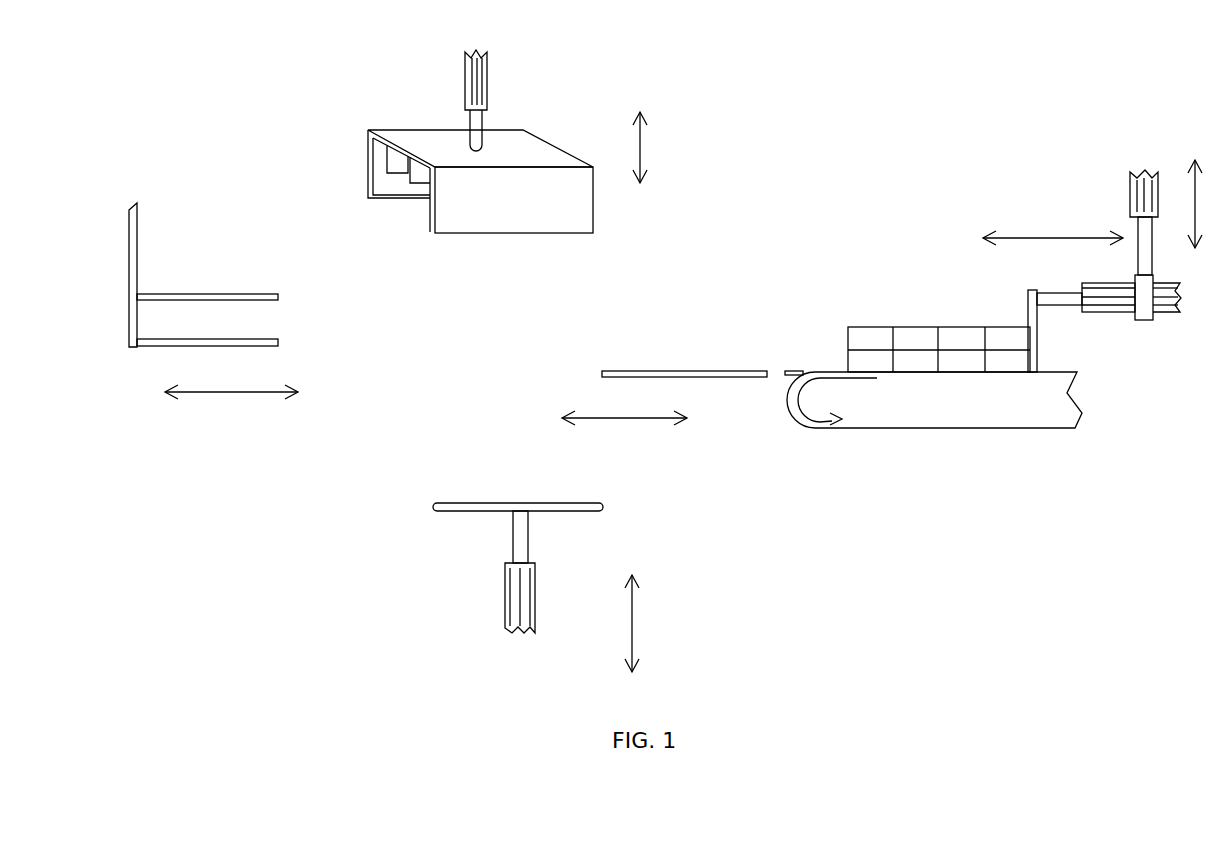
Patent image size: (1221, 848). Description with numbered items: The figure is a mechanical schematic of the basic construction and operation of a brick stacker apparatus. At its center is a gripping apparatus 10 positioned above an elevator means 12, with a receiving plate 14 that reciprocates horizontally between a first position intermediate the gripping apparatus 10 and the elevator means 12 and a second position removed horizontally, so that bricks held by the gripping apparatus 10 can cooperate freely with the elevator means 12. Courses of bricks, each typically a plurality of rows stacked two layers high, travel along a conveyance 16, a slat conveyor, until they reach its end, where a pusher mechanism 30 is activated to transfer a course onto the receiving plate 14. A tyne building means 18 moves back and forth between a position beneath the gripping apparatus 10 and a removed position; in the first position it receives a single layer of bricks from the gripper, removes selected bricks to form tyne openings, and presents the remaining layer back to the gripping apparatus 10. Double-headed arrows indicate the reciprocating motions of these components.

The gripping apparatus 10 is at (518, 143).
The elevator means 12 is at (520, 532).
The receiving plate 14 is at (683, 371).
The conveyance 16 is at (833, 372).
The tyne building means 18 is at (135, 272).
The pusher mechanism 30 is at (1033, 340).